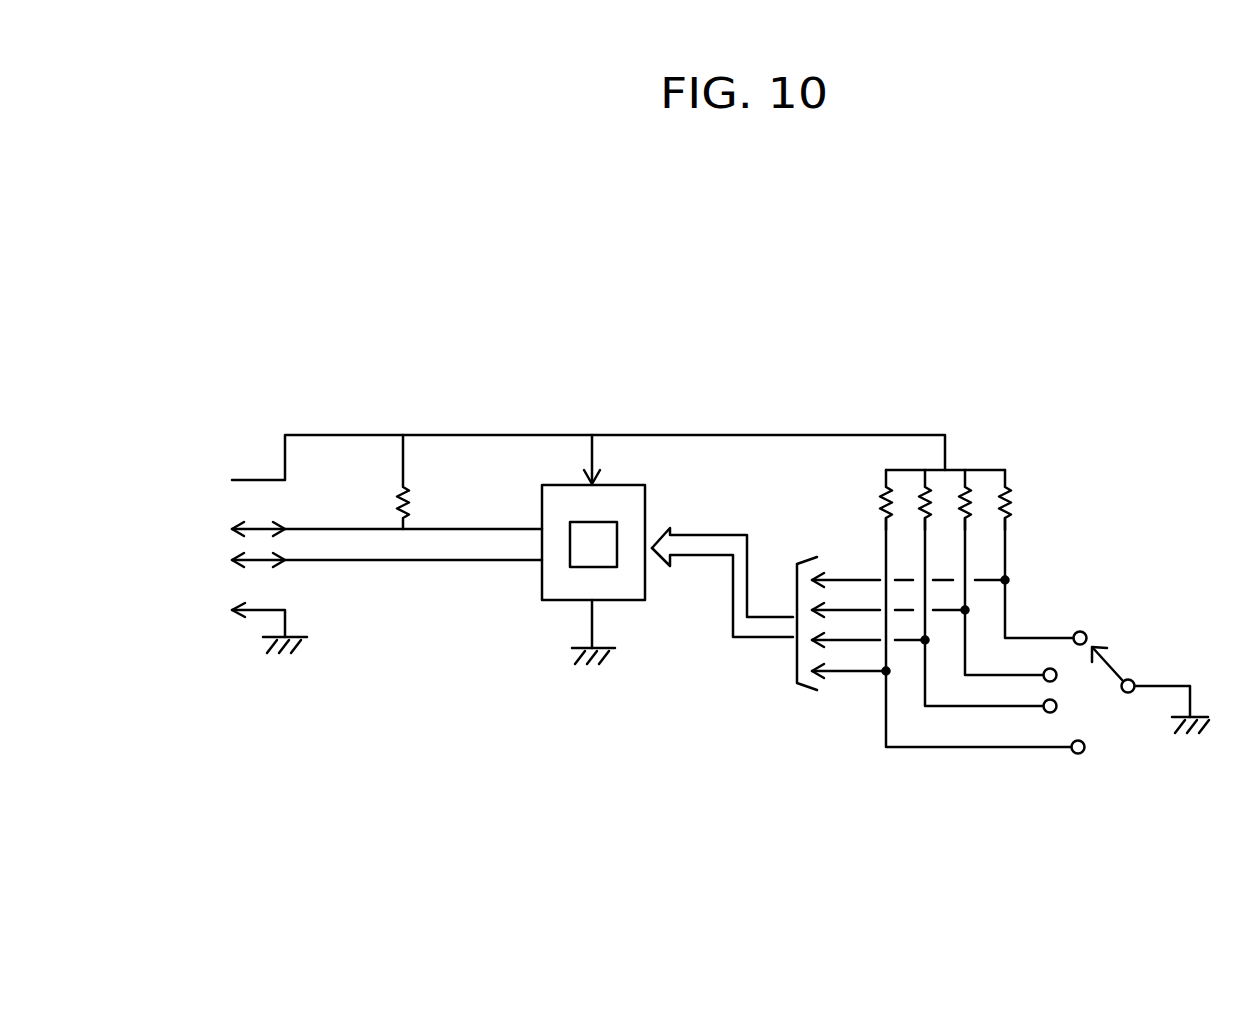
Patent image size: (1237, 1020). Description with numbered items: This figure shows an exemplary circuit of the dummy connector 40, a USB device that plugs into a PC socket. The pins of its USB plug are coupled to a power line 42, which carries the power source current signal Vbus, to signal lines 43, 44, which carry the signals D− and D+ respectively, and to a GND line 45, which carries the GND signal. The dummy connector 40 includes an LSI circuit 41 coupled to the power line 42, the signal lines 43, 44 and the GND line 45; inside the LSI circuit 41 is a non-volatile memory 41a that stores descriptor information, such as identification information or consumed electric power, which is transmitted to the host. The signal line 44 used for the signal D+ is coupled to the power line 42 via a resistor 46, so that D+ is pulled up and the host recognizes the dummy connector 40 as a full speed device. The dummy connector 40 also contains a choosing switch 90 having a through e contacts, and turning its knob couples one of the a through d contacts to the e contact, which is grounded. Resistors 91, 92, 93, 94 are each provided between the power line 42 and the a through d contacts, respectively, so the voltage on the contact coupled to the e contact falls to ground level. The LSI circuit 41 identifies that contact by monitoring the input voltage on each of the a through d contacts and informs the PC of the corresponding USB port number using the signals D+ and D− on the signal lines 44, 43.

The dummy connector 40 is at (694, 342).
The LSI circuit 41 is at (624, 485).
The non-volatile memory 41a is at (577, 552).
The power line 42 is at (304, 436).
The signal line 43 is at (313, 562).
The signal line 44 is at (304, 529).
The GND line 45 is at (290, 634).
The resistor 46 is at (420, 472).
The choosing switch 90 is at (1035, 467).
The resistor 91 is at (876, 500).
The resistor 92 is at (918, 480).
The resistor 93 is at (980, 482).
The resistor 94 is at (1018, 505).